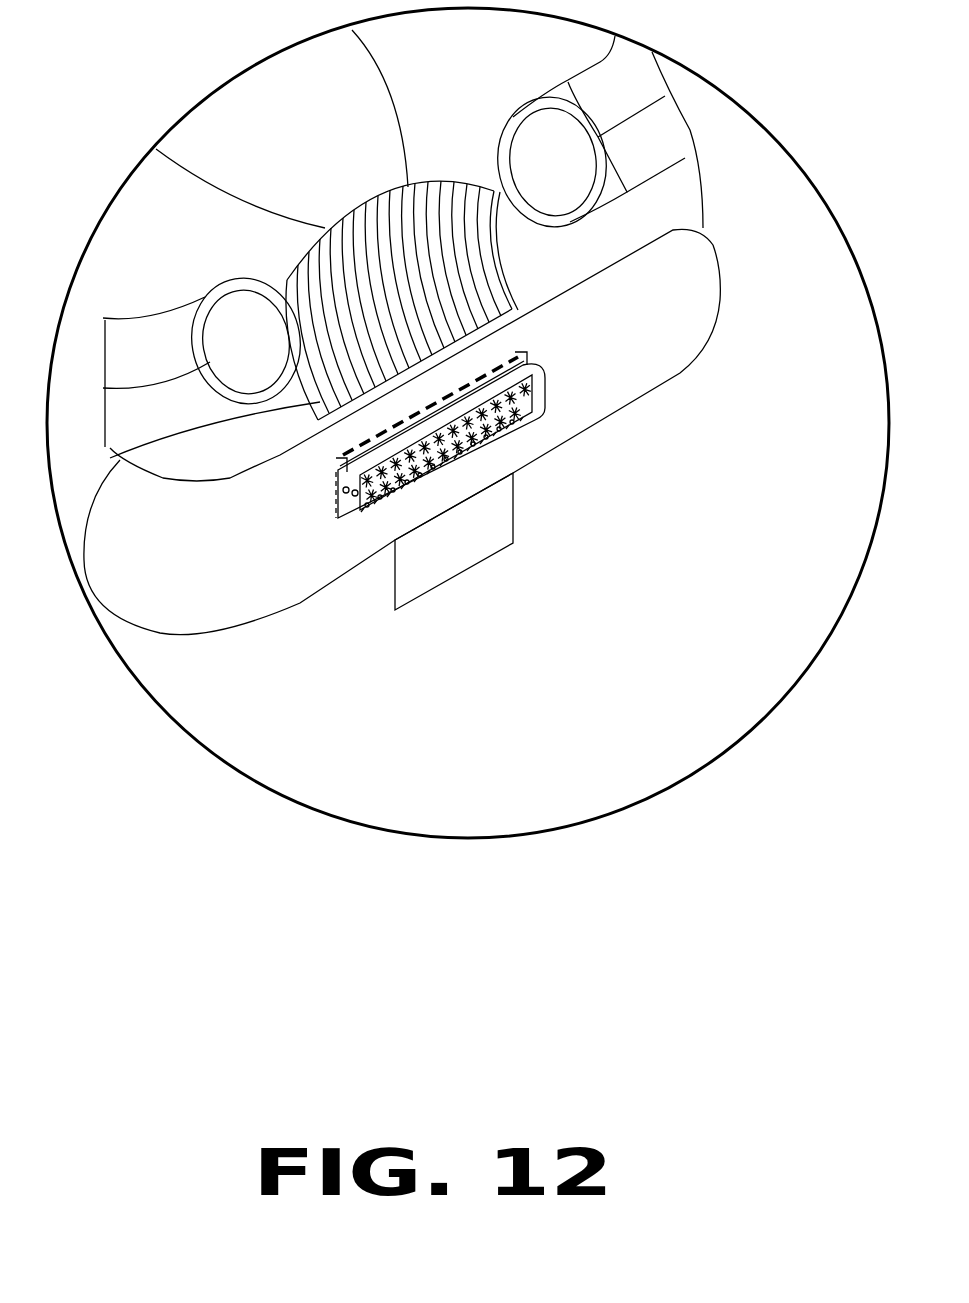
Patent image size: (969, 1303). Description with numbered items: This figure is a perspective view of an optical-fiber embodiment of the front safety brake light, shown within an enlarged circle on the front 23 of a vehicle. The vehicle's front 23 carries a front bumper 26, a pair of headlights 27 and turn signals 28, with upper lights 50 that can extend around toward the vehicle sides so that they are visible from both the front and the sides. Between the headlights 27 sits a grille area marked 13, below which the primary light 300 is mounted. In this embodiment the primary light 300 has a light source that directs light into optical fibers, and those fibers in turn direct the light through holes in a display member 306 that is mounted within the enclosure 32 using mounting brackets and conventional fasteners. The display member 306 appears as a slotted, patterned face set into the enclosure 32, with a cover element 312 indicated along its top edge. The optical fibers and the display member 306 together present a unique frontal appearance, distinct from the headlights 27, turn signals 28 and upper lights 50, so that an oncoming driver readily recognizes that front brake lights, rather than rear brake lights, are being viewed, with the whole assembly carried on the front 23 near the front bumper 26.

The grille 13 is at (422, 398).
The front 23 is at (287, 420).
The front bumper 26 is at (296, 578).
The headlights 27 is at (225, 315).
The turn signals 28 is at (645, 133).
The upper lights 50 is at (605, 95).
The enclosure 32 is at (345, 500).
The primary light 300 is at (561, 462).
The display member 306 is at (555, 380).
The housing cover 312 is at (543, 393).